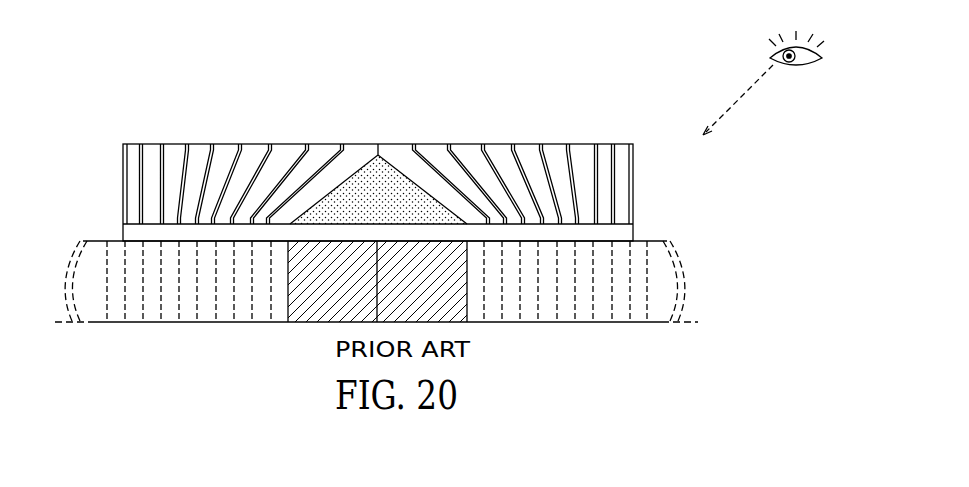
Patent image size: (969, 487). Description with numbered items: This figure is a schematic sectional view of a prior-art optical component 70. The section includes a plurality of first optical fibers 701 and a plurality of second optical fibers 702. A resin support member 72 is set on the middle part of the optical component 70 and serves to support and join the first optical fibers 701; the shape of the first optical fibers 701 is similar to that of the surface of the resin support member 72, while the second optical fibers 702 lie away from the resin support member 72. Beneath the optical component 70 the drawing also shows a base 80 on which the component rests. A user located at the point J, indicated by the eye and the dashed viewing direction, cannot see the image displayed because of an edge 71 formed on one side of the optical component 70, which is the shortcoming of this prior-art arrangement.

The optical component 70 is at (530, 152).
The first optical fibers 701 is at (430, 150).
The second optical fibers 702 is at (608, 157).
The edge 71 is at (138, 170).
The resin support member 72 is at (350, 193).
The base substrate 80 is at (567, 322).
The point J is at (763, 83).